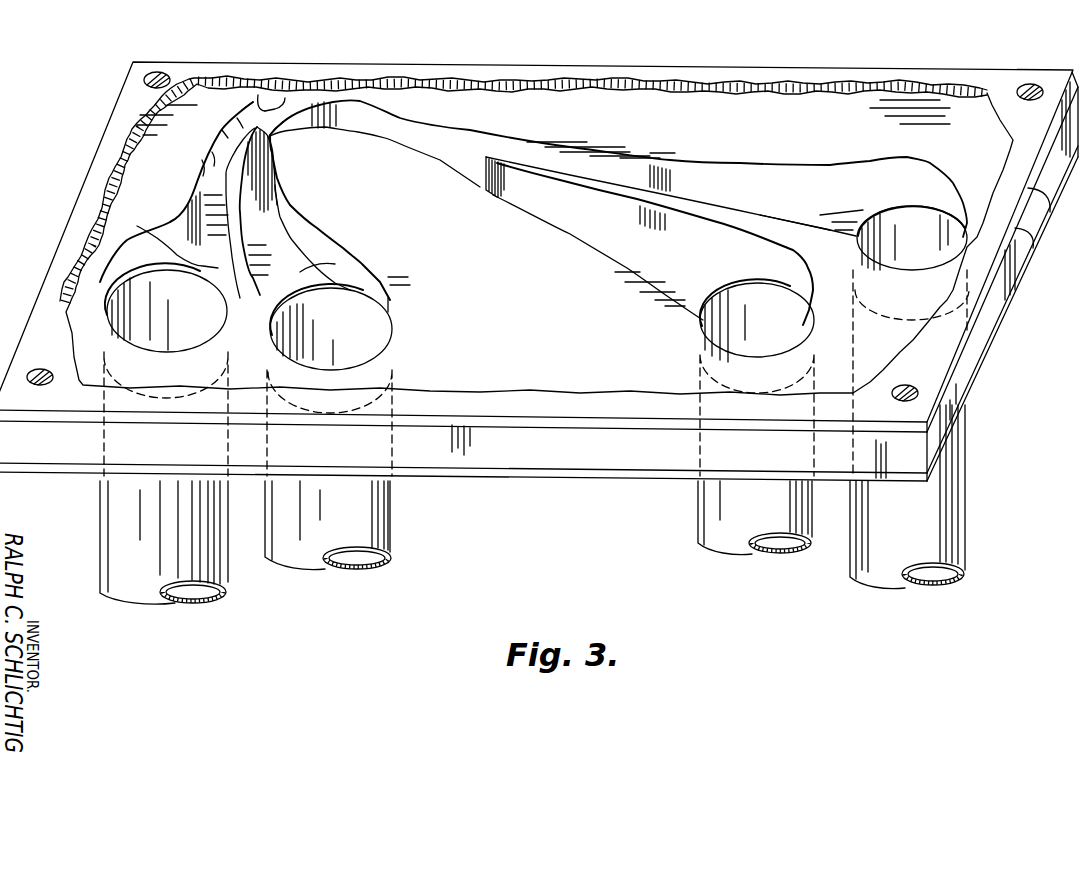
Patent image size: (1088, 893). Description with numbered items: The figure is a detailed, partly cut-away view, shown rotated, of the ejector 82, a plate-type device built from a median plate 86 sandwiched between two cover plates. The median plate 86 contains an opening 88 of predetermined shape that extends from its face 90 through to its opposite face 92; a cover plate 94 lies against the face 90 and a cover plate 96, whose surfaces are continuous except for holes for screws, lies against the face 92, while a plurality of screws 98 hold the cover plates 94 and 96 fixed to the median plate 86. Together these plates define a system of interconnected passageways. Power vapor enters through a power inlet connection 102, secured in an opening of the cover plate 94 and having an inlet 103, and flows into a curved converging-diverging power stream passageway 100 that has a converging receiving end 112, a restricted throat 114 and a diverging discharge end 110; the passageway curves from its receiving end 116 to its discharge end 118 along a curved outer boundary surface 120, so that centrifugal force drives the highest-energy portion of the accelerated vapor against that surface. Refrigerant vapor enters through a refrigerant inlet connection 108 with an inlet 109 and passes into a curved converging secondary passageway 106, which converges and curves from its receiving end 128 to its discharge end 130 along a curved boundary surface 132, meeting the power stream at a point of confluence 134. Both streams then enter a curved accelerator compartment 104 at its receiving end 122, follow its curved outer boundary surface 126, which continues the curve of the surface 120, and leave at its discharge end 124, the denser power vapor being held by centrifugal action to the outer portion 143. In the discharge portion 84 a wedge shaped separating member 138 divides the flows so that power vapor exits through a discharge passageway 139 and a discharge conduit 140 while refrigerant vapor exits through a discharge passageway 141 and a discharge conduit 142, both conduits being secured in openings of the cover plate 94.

The ejector 82 is at (48, 472).
The discharge portion 84 is at (697, 183).
The median plate 86 is at (990, 315).
The opening 88 is at (696, 285).
The face of median plate 90 is at (987, 343).
The opposite face of median plate 92 is at (1031, 242).
The cover plate 94 is at (975, 373).
The cover plate 96 is at (1038, 210).
The screws 98 is at (160, 74).
The curved converging-diverging power stream passageway 100 is at (197, 180).
The power inlet connection 102 is at (117, 533).
The inlet 103 is at (143, 313).
The curved accelerator compartment 104 is at (283, 125).
The curved converging secondary passageway 106 is at (287, 252).
The refrigerant inlet connection 108 is at (380, 506).
The inlet 109 is at (367, 327).
The diverging discharge end 110 is at (243, 122).
The converging receiving end 112 is at (217, 157).
The restricted throat 114 is at (230, 128).
The receiving end 116 is at (157, 238).
The discharge end 118 is at (247, 113).
The curved outer boundary surface 120 is at (203, 167).
The receiving end 122 is at (262, 112).
The discharge end 124 is at (462, 152).
The curved outer boundary surface 126 is at (280, 108).
The receiving end 128 is at (302, 272).
The discharge end 130 is at (262, 191).
The curved boundary surface 132 is at (250, 169).
The point of confluence 134 is at (276, 139).
The wedge shaped separating member 138 is at (563, 207).
The discharge passageway 139 is at (832, 217).
The discharge conduit 140 is at (947, 505).
The discharge passageway 141 is at (607, 250).
The discharge conduit 142 is at (707, 503).
The outer portion 143 is at (435, 133).